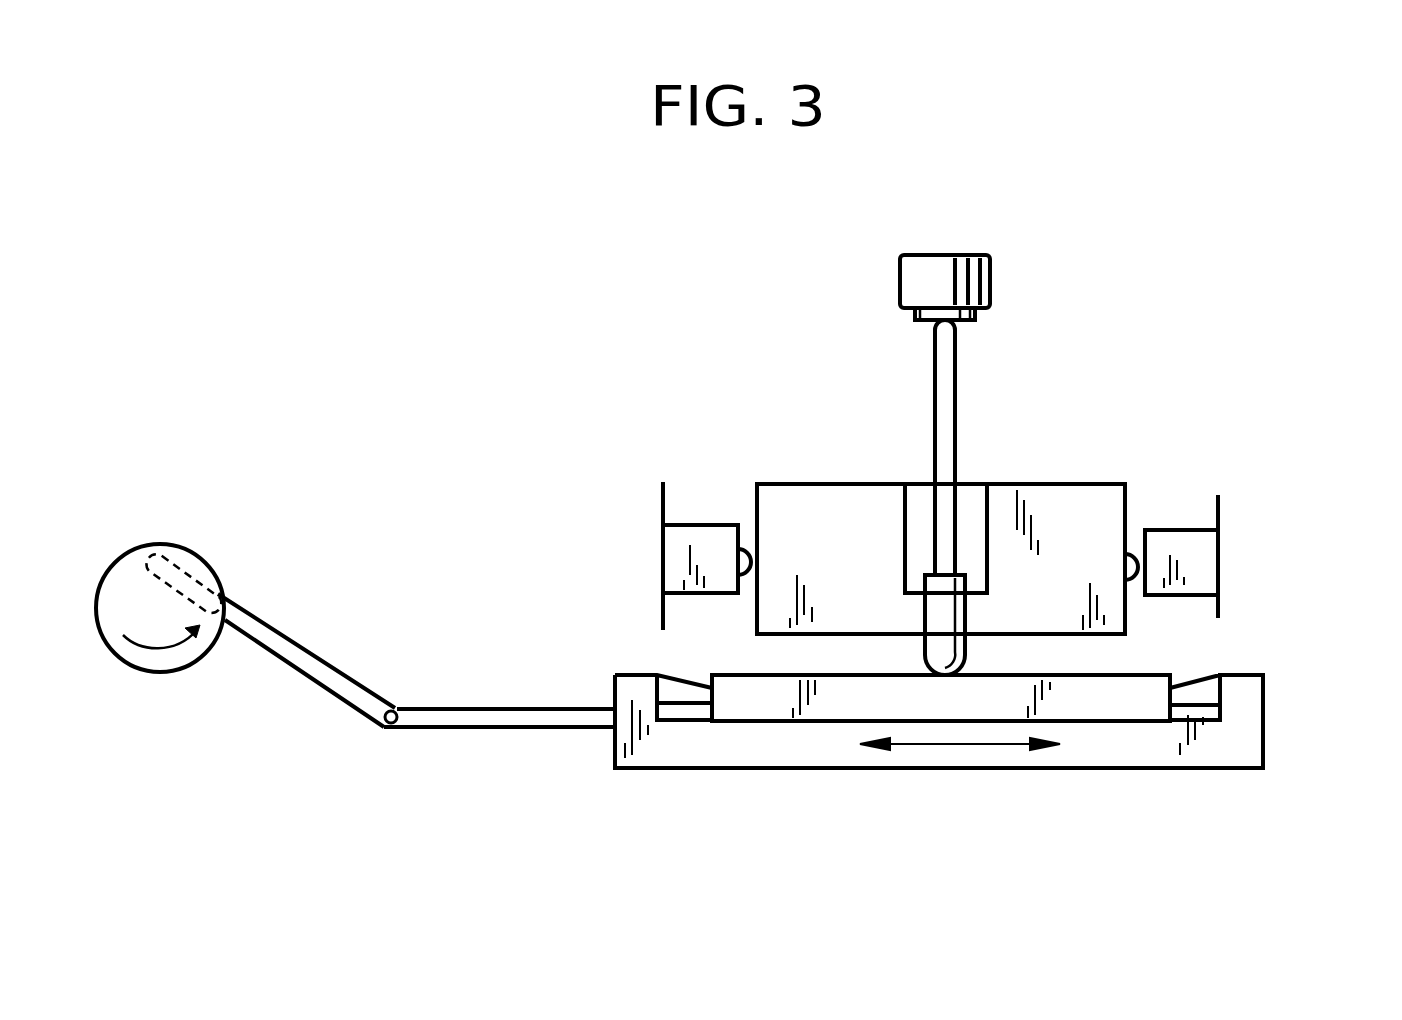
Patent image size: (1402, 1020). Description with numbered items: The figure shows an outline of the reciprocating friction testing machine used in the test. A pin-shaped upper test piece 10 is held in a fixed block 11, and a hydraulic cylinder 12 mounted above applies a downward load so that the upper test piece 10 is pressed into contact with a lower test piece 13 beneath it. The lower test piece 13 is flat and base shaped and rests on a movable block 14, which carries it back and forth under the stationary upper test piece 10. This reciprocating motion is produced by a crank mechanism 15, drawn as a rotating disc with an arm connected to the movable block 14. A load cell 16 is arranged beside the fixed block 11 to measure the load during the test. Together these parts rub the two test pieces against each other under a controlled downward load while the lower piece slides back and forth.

The upper test piece 10 is at (963, 658).
The fixed block 11 is at (1082, 484).
The hydraulic cylinder 12 is at (902, 273).
The lower test piece 13 is at (1117, 703).
The movable block 14 is at (725, 770).
The crank mechanism 15 is at (230, 633).
The load cell 16 is at (1207, 548).